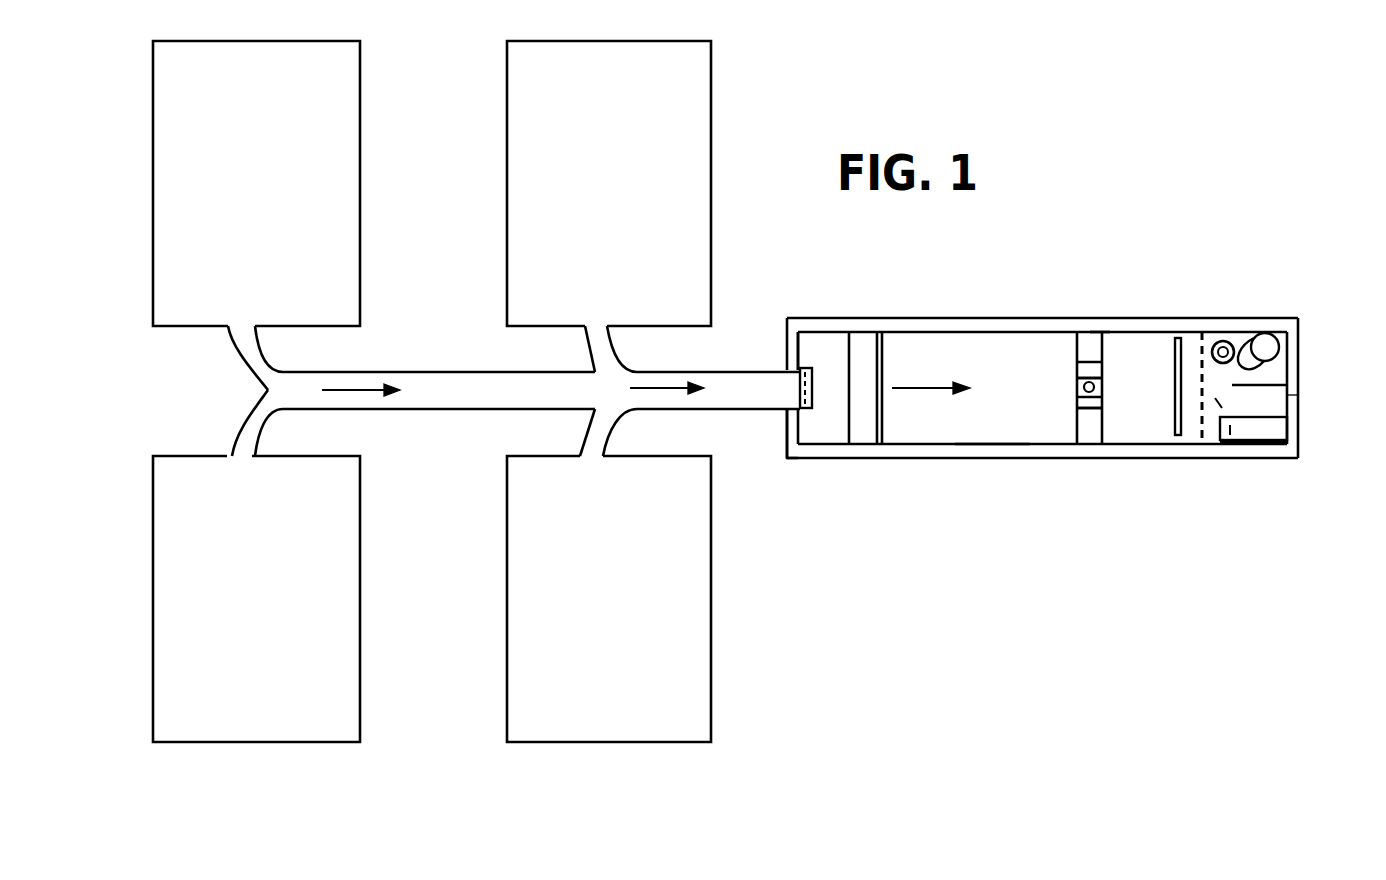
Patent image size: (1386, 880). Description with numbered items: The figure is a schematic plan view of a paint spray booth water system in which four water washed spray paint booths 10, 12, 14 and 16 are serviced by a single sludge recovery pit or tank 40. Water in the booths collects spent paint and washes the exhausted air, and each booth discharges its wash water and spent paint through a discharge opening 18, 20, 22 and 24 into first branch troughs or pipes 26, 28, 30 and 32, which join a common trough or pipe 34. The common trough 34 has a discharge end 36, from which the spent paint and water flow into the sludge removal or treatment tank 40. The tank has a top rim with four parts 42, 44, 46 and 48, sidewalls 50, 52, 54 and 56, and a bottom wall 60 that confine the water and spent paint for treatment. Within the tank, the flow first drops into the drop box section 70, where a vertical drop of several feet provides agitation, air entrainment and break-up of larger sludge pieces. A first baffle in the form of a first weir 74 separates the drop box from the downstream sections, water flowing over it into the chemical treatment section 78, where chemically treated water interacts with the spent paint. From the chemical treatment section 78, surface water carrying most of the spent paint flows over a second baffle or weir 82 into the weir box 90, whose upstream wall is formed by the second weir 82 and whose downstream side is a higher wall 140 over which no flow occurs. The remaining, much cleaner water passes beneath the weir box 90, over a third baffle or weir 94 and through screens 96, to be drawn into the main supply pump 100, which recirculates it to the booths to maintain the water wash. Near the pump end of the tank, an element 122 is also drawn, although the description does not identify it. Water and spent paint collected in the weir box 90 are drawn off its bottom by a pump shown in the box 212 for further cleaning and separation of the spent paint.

The water washed spray paint booth 10 is at (229, 171).
The water washed spray paint booth 12 is at (591, 171).
The water washed spray paint booth 14 is at (229, 612).
The water washed spray paint booth 16 is at (591, 612).
The discharge opening 18 is at (236, 333).
The discharge opening 20 is at (586, 334).
The discharge opening 22 is at (258, 452).
The discharge opening 24 is at (610, 455).
The first branch trough or pipe 26 is at (238, 376).
The first branch trough or pipe 28 is at (630, 352).
The first branch trough or pipe 30 is at (236, 429).
The first branch trough or pipe 32 is at (582, 434).
The common trough or pipe 34 is at (412, 372).
The discharge end 36 is at (818, 386).
The sludge removal or treatment pit or tank 40 is at (1054, 375).
The top rim part 42 is at (789, 452).
The top rim part 44 is at (1027, 449).
The top rim part 46 is at (1292, 401).
The top rim part 48 is at (925, 322).
The sidewall 50 is at (787, 436).
The sidewall 52 is at (1096, 405).
The sidewall 54 is at (1300, 355).
The sidewall 56 is at (1100, 322).
The bottom wall 60 is at (1012, 389).
The drop box section 70 is at (820, 353).
The first weir 74 is at (862, 345).
The chemical treatment section 78 is at (962, 422).
The second weir 82 is at (1062, 388).
The weir box 90 is at (1095, 405).
The third weir 94 is at (1203, 335).
The screens 96 is at (1232, 446).
The main supply pump 100 is at (1268, 340).
The pin 122 is at (1298, 383).
The downstream higher wall 140 is at (1100, 347).
The box 212 is at (1248, 418).